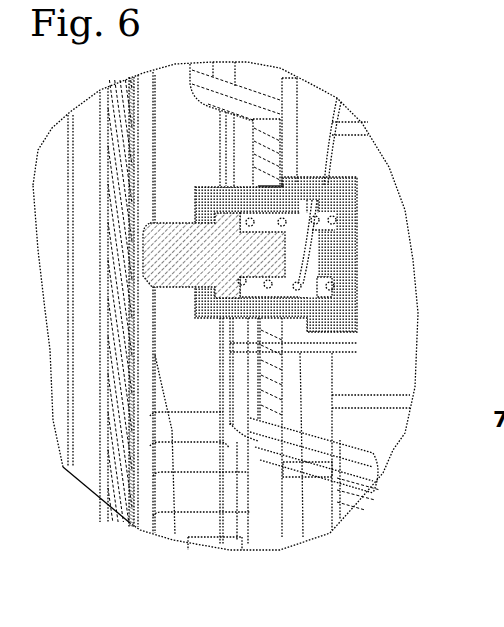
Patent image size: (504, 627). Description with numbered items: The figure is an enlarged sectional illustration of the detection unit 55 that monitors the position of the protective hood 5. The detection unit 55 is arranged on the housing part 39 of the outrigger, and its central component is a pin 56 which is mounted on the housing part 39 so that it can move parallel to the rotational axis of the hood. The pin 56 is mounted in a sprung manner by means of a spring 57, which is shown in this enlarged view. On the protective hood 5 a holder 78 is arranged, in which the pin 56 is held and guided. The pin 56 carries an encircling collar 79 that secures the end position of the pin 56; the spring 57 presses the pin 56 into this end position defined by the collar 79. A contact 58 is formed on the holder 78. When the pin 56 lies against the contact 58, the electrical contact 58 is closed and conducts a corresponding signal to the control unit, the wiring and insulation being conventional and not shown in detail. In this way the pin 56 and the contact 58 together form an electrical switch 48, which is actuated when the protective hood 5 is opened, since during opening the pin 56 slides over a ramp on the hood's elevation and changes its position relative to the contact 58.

The protective hood 5 is at (117, 117).
The housing part 39 is at (253, 108).
The spring 57 is at (313, 212).
The contact 58 is at (317, 257).
The holder 78 is at (348, 312).
The pin 56 is at (170, 277).
The collar 79 is at (230, 290).
The electrical switch 48 is at (313, 277).
The detection unit 55 is at (345, 335).